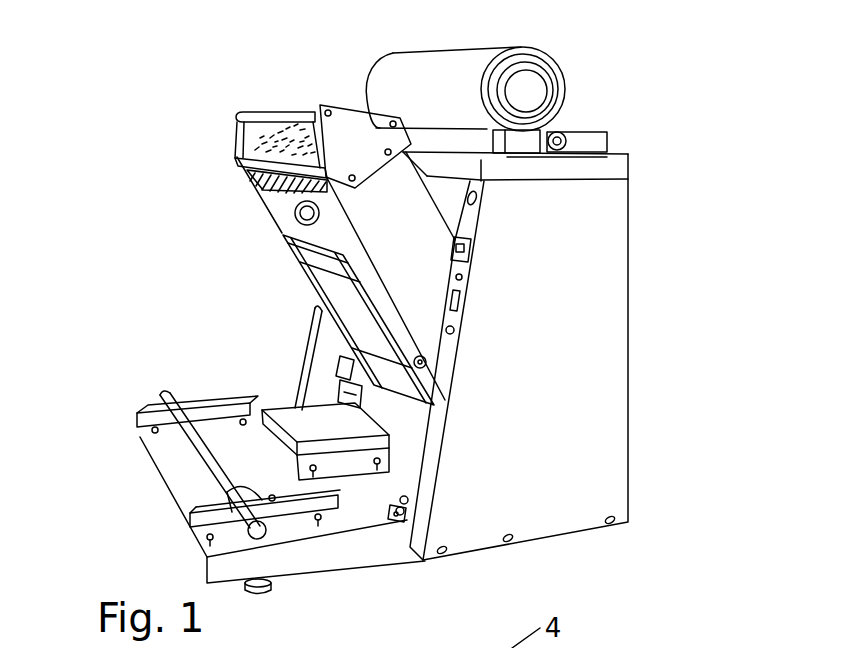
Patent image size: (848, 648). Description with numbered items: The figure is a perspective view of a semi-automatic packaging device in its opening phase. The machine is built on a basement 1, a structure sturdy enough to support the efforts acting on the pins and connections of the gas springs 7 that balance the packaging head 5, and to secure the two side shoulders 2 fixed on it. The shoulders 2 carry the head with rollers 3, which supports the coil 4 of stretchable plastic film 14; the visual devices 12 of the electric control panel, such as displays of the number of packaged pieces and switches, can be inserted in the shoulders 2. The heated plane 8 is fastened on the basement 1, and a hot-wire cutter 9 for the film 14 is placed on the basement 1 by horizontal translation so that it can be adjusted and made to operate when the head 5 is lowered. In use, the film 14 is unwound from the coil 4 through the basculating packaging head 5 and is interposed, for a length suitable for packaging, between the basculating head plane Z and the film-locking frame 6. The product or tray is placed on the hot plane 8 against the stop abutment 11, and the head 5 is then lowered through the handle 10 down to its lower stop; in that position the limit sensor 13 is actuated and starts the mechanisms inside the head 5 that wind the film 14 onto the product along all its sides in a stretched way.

The basement 1 is at (317, 548).
The shoulders 2 is at (565, 370).
The head with rollers 3 is at (580, 168).
The coil 4 is at (447, 70).
The packaging head 5 is at (410, 220).
The film-locking frame 6 is at (282, 237).
The gas springs 7 is at (347, 362).
The heated plane 8 is at (300, 416).
The hot-wire cutter 9 is at (200, 457).
The handle 10 is at (278, 113).
The stop abutment 11 is at (360, 403).
The visual devices 12 is at (463, 250).
The limit sensor 13 is at (408, 507).
The plastic film 14 is at (260, 175).
The basculating head plane Z is at (305, 213).